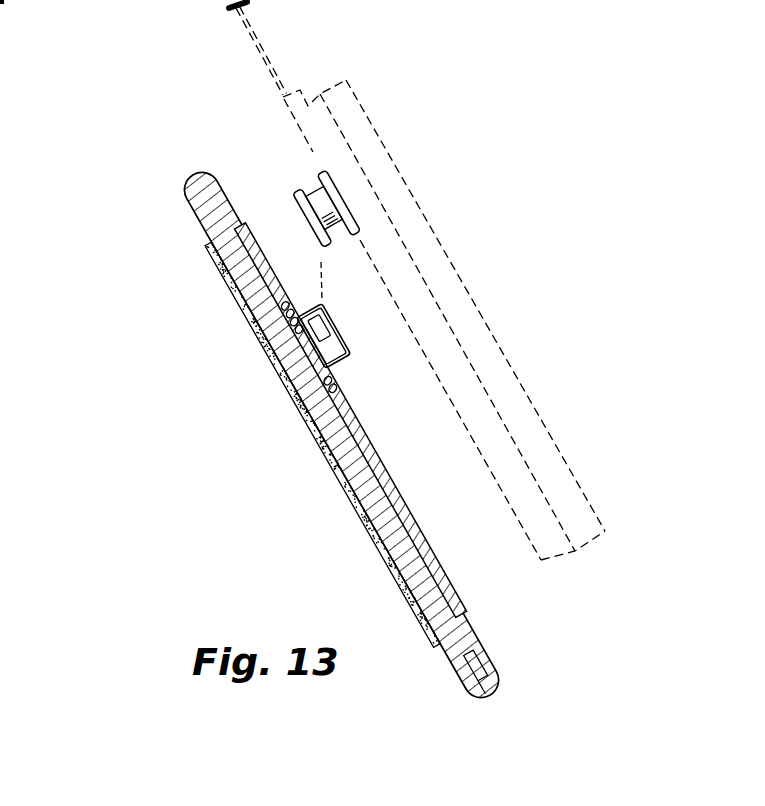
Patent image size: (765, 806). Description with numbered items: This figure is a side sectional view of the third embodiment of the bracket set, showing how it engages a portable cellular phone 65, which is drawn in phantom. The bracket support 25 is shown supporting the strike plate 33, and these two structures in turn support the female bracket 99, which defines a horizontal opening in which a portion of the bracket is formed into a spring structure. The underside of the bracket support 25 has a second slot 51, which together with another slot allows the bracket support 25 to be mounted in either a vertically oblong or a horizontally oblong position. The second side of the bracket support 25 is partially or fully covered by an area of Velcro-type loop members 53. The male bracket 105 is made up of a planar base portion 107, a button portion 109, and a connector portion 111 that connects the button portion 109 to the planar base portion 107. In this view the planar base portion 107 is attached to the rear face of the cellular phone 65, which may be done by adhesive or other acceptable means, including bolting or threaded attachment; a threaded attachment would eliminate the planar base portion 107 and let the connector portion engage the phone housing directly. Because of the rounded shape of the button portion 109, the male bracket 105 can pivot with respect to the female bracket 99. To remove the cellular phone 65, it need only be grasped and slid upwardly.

The bracket support 25 is at (341, 435).
The strike plate 33 is at (351, 420).
The second slot 51 is at (479, 672).
The Velcro-type loop members 53 is at (323, 445).
The portable cellular phone 65 is at (433, 227).
The female bracket 99 is at (321, 340).
The male bracket 105 is at (326, 210).
The planar base portion 107 is at (338, 203).
The button portion 109 is at (312, 218).
The connector portion 111 is at (324, 207).